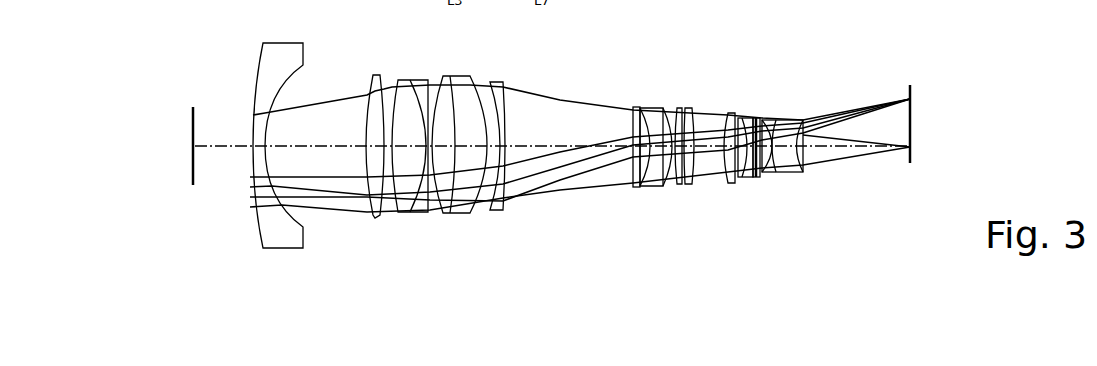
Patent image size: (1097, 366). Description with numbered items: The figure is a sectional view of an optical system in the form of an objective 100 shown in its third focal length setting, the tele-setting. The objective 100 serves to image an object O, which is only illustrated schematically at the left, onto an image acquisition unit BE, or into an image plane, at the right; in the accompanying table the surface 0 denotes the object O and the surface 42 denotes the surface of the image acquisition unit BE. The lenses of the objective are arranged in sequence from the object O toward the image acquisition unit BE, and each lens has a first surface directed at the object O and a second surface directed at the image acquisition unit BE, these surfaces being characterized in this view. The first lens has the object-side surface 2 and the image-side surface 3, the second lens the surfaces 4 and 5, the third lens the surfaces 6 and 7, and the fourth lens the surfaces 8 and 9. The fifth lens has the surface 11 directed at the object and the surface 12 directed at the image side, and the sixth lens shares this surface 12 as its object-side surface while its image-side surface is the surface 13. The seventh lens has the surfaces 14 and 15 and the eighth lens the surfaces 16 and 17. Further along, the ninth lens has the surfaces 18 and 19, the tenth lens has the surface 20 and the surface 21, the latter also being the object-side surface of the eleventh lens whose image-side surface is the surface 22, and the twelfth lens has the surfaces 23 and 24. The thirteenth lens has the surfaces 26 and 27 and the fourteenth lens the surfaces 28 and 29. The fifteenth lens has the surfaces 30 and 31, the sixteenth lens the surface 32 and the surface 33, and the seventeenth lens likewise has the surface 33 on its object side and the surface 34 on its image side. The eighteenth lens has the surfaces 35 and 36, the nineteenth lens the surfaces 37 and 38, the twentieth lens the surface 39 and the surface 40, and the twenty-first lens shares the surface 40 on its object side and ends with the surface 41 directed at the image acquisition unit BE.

The surface of object 0 is at (194, 185).
The object O is at (192, 130).
The surface of first lens directed at object 2 is at (282, 163).
The surface of first lens directed at image acquisition unit 3 is at (300, 250).
The surface of second lens directed at object 4 is at (361, 154).
The surface of second lens directed at image acquisition unit 5 is at (376, 218).
The surface of third lens directed at object 6 is at (407, 154).
The surface of third lens directed at image acquisition unit 7 is at (421, 154).
The surface of fourth lens directed at object 8 is at (421, 152).
The surface of fourth lens directed at image acquisition unit 9 is at (420, 213).
The surface of fifth lens directed at object 11 is at (473, 155).
The shared surface of fifth and sixth lenses 12 is at (473, 155).
The surface of sixth lens directed at image acquisition unit 13 is at (473, 150).
The surface of seventh lens directed at object 14 is at (470, 214).
The surface of seventh lens directed at image acquisition unit 15 is at (523, 158).
The surface of eighth lens directed at object 16 is at (523, 158).
The surface of eighth lens directed at image acquisition unit 17 is at (505, 83).
The surface of ninth lens directed at object 18 is at (627, 160).
The surface of ninth lens directed at image acquisition unit 19 is at (635, 190).
The surface of tenth lens directed at object 20 is at (664, 149).
The shared surface of tenth and eleventh lenses 21 is at (665, 149).
The surface of eleventh lens directed at image acquisition unit 22 is at (665, 136).
The surface of twelfth lens directed at object 23 is at (660, 187).
The surface of twelfth lens directed at image acquisition unit 24 is at (707, 155).
The surface of thirteenth lens directed at object 26 is at (707, 161).
The surface of thirteenth lens directed at image acquisition unit 27 is at (707, 161).
The surface of fourteenth lens directed at object 28 is at (707, 173).
The surface of fourteenth lens directed at image acquisition unit 29 is at (682, 110).
The surface of fifteenth lens directed at object 30 is at (732, 184).
The surface of fifteenth lens directed at image acquisition unit 31 is at (764, 146).
The surface of sixteenth lens directed at object 32 is at (764, 151).
The shared surface of sixteenth and seventeenth lenses 33 is at (755, 178).
The surface of seventeenth lens directed at image acquisition unit 34 is at (816, 147).
The surface of eighteenth lens directed at object 35 is at (816, 147).
The surface of eighteenth lens directed at image acquisition unit 36 is at (816, 155).
The surface of nineteenth lens directed at object 37 is at (816, 155).
The surface of nineteenth lens directed at image acquisition unit 38 is at (815, 168).
The surface of twentieth lens directed at object 39 is at (797, 120).
The shared surface of twentieth and twenty-first lenses 40 is at (803, 158).
The surface of twenty-first lens directed at image acquisition unit 41 is at (803, 153).
The surface of image acquisition unit 42 is at (912, 163).
The image acquisition unit BE is at (912, 91).
The objective 100 is at (586, 41).